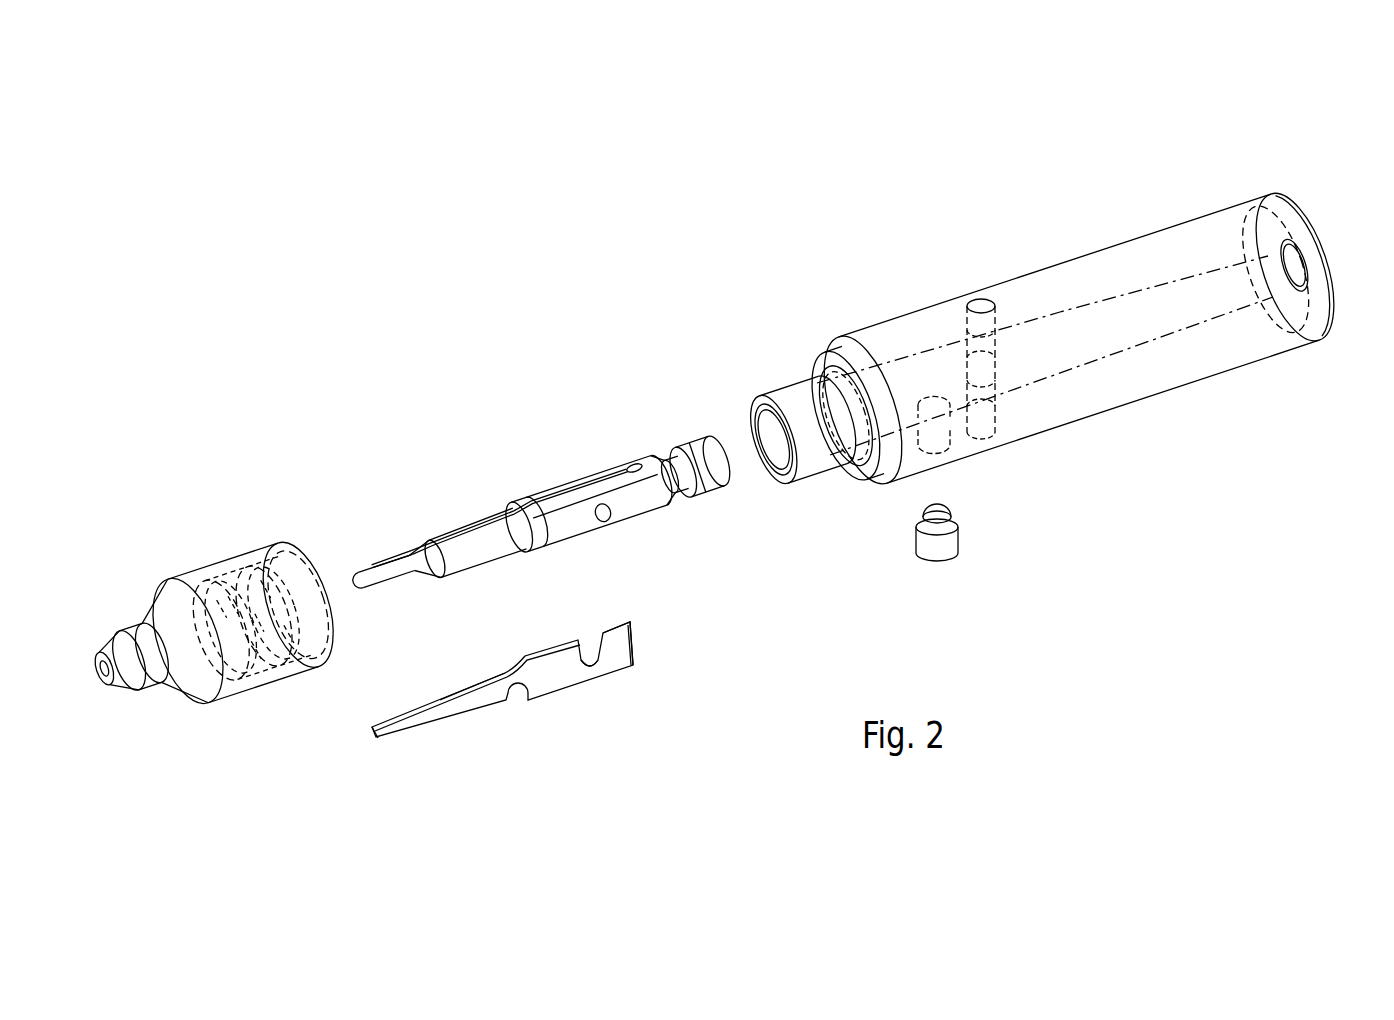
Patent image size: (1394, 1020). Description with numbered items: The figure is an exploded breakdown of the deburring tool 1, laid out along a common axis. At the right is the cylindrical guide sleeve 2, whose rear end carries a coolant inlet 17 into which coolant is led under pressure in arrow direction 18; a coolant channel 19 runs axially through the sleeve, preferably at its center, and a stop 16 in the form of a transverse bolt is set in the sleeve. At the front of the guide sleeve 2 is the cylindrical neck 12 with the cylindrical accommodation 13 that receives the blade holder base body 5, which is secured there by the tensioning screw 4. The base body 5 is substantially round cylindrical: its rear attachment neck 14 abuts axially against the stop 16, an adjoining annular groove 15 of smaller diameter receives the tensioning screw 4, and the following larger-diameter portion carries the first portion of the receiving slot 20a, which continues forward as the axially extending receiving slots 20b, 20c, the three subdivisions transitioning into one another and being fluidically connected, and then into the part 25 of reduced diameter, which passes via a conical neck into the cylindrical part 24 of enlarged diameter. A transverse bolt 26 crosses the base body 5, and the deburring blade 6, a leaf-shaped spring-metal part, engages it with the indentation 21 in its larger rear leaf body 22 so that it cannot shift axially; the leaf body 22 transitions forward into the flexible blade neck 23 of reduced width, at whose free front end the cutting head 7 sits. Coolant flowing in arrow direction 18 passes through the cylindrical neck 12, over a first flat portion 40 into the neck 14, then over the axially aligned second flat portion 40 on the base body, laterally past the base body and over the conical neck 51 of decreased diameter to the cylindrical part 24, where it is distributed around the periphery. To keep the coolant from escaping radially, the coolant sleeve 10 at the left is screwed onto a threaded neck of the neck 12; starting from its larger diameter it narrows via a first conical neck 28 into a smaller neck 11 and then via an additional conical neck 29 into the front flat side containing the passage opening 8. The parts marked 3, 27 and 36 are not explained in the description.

The tool 1 is at (1060, 361).
The cylindrical guide sleeve 2 is at (1087, 329).
The housing body 3 is at (955, 435).
The tensioning screw 4 is at (958, 532).
The blade holder base body 5 is at (550, 487).
The deburring blade 6 is at (532, 723).
The cutting head 7 is at (378, 740).
The passage opening 8 is at (105, 685).
The coolant sleeve 10 is at (217, 648).
The smaller neck 11 is at (132, 628).
The cylindrical neck 12 is at (822, 463).
The cylindrical accommodation 13 is at (773, 483).
The attachment neck 14 is at (712, 455).
The annular groove 15 is at (673, 455).
The stop 16 is at (990, 392).
The coolant inlet 17 is at (1290, 242).
The arrow direction 18 is at (1334, 252).
The coolant channel 19 is at (1160, 305).
The first portion of receiving slot 20a is at (537, 500).
The receiving slot portion 20b is at (433, 544).
The receiving slot portion 20c is at (400, 556).
The indentation 21 is at (590, 668).
The rear leaf body 22 is at (618, 648).
The blade neck 23 is at (485, 698).
The cylindrical part 24 is at (483, 550).
The part of reduced diameter 25 is at (392, 590).
The transverse bolt 26 is at (608, 520).
The internal thread 27 is at (281, 588).
The first conical neck 28 is at (207, 690).
The additional conical neck 29 is at (148, 690).
The plunger tip 36 is at (362, 590).
The flat portion 40 is at (648, 497).
The conical neck 51 is at (522, 540).